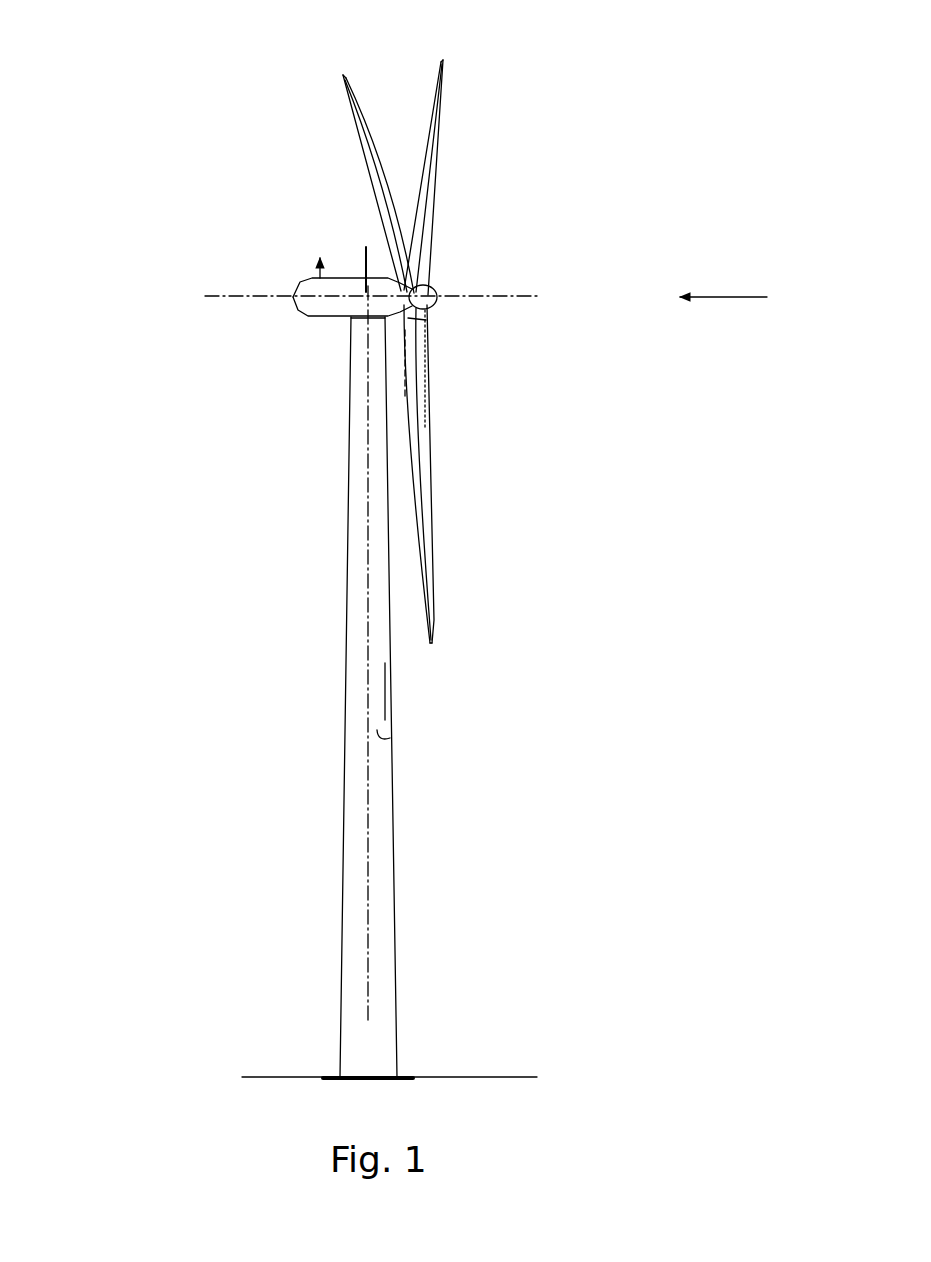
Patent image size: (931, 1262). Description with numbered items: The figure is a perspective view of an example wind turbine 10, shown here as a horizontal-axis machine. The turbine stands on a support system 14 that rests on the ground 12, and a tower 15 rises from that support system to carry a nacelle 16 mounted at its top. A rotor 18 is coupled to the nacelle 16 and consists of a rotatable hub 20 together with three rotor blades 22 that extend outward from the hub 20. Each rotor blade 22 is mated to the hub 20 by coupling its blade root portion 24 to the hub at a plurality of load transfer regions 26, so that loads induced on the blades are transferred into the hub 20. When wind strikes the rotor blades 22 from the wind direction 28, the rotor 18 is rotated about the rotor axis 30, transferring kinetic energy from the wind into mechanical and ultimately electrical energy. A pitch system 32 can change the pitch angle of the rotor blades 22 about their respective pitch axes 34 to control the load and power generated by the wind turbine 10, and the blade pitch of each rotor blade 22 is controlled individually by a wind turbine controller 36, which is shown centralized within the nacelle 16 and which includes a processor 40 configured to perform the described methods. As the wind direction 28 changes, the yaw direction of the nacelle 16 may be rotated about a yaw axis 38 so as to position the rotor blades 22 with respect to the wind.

The wind turbine 10 is at (130, 86).
The ground 12 is at (266, 1076).
The support system 14 is at (328, 1076).
The tower 15 is at (345, 668).
The nacelle 16 is at (320, 316).
The rotor 18 is at (425, 344).
The rotatable hub 20 is at (440, 297).
The rotor blade 22 is at (368, 148).
The blade root portion 24 is at (428, 400).
The load transfer regions 26 is at (428, 322).
The wind direction 28 is at (733, 296).
The rotor axis 30 is at (537, 300).
The pitch system 32 is at (428, 353).
The pitch axes 34 is at (340, 82).
The wind turbine controller 36 is at (352, 345).
The yaw axis 38 is at (395, 737).
The processor 40 is at (366, 246).